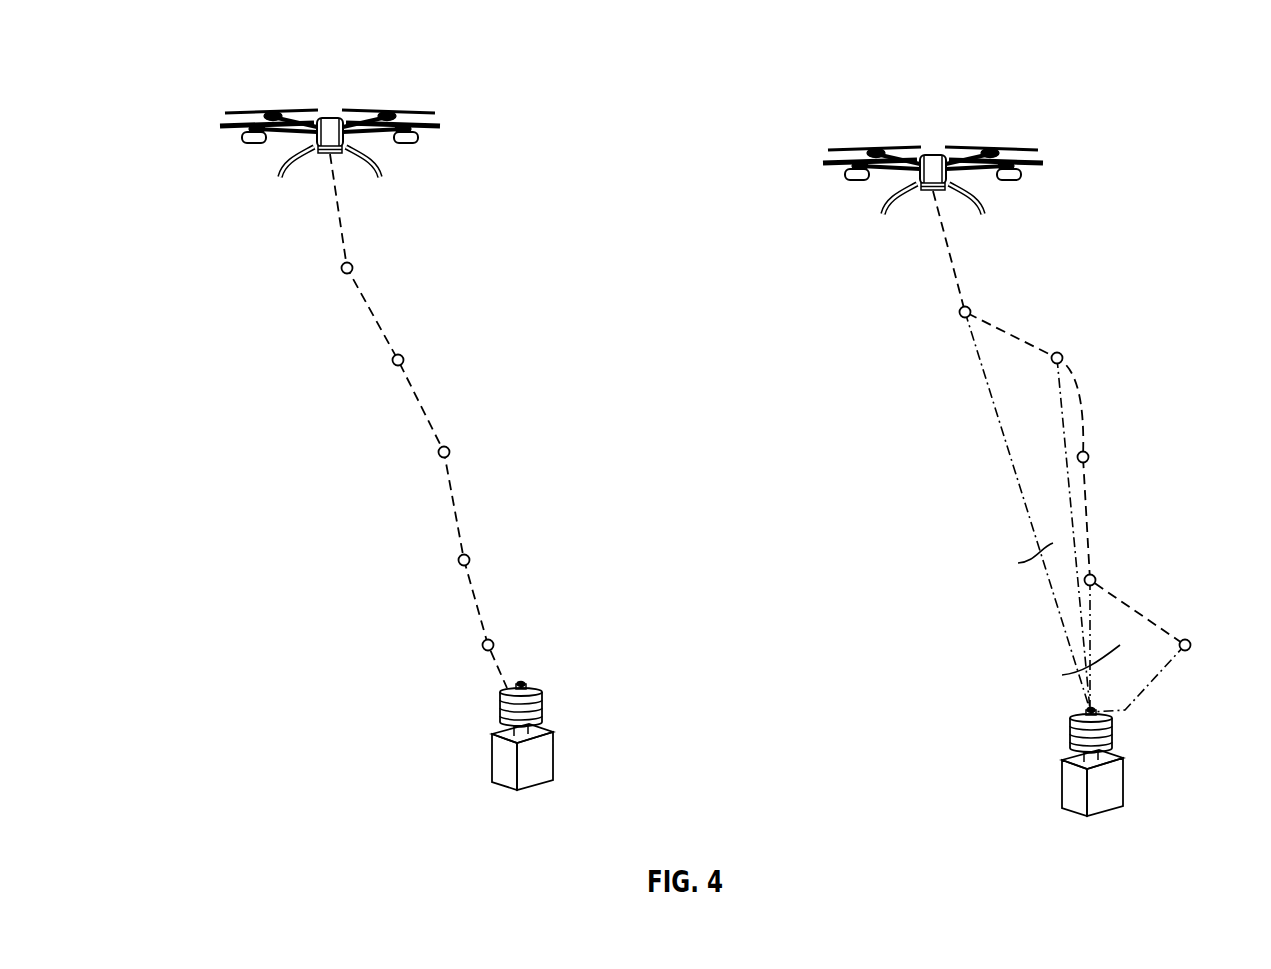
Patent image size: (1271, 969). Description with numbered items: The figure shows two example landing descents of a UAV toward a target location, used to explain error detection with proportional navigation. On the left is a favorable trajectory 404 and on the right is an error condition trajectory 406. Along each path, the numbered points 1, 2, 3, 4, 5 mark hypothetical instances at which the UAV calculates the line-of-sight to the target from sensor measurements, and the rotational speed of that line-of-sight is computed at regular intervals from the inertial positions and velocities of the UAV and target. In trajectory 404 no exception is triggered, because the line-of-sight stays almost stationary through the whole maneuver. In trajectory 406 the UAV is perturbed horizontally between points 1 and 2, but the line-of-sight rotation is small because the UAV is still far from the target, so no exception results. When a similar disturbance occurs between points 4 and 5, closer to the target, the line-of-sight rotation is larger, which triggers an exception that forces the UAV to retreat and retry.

The favorable trajectory 404 is at (172, 90).
The error condition trajectory 406 is at (814, 110).
The point 1 is at (665, 286).
The point 2 is at (738, 353).
The point 3 is at (775, 453).
The point 4 is at (787, 569).
The point 5 is at (848, 644).